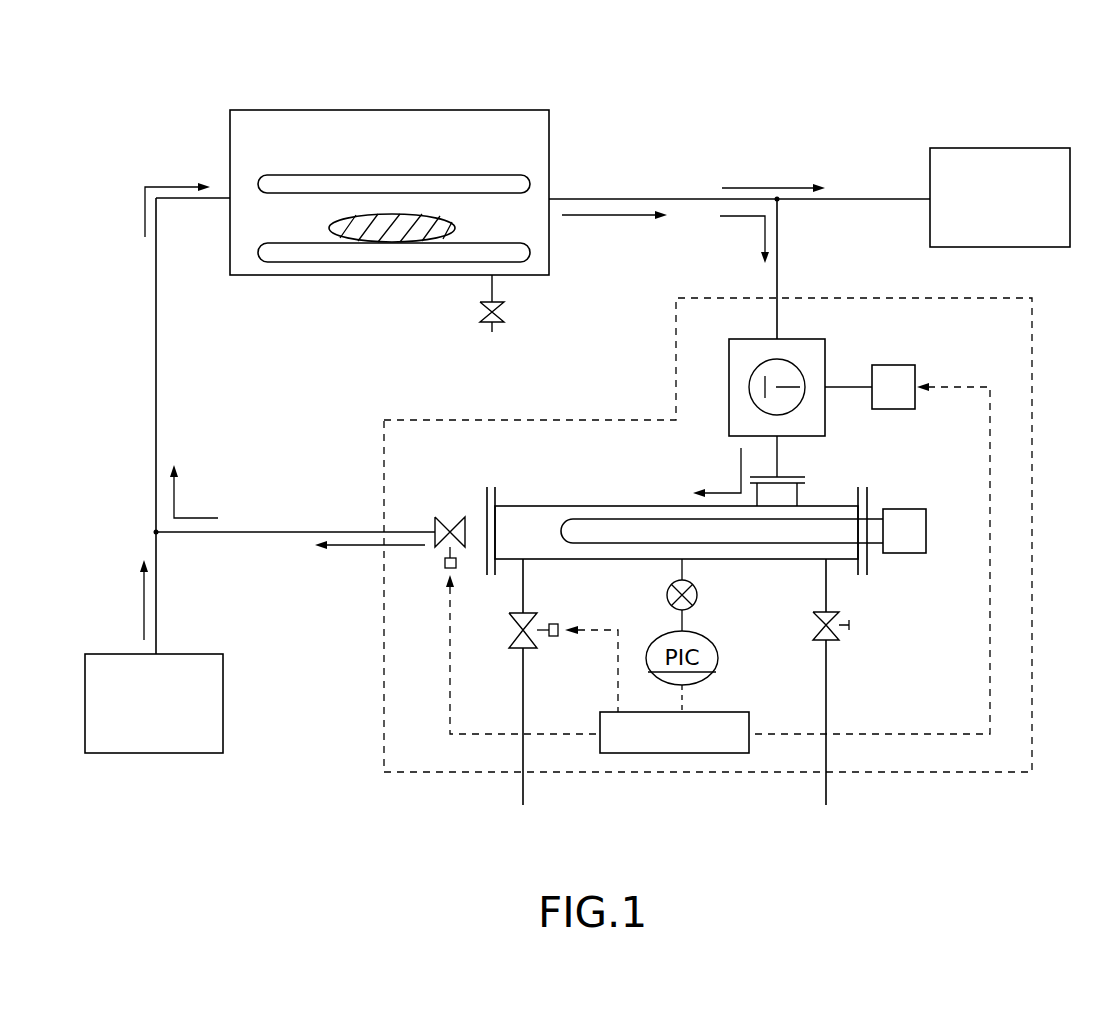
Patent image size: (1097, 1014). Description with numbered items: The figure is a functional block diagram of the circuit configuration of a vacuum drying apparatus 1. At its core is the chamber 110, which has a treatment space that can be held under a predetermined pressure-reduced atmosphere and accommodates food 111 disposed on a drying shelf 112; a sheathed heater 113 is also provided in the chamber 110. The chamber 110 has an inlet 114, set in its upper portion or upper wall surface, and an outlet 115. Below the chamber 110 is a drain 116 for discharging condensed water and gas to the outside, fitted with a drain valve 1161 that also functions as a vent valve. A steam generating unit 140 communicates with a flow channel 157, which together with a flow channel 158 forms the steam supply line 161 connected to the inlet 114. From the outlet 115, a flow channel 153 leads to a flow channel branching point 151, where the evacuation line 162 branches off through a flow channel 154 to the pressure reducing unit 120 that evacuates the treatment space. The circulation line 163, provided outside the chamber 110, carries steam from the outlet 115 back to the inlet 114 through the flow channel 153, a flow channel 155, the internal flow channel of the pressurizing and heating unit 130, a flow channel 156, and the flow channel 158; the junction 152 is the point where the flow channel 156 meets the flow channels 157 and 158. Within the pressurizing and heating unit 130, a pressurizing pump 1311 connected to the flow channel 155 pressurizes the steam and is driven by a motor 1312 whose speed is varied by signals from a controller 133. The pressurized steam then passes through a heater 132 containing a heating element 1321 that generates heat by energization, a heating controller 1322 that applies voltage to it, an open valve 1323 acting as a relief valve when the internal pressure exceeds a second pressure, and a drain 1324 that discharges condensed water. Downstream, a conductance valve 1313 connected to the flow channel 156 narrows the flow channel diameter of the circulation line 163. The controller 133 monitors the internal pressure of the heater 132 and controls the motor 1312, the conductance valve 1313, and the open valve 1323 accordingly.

The vacuum drying apparatus 1 is at (188, 76).
The chamber 110 is at (282, 110).
The food 111 is at (360, 247).
The drying shelf 112 is at (295, 263).
The sheathed heater 113 is at (450, 175).
The inlet 114 is at (228, 203).
The outlet 115 is at (552, 197).
The drain 116 is at (503, 310).
The drain valve 1161 is at (483, 317).
The pressure reducing unit 120 is at (1010, 148).
The pressurizing and heating unit 130 is at (930, 773).
The pressurizing pump 1311 is at (728, 378).
The motor 1312 is at (927, 350).
The conductance valve 1313 is at (448, 515).
The heater 132 is at (592, 503).
The heating element 1321 is at (647, 518).
The heating controller 1322 is at (902, 508).
The open valve 1323 is at (527, 613).
The drain 1324 is at (843, 618).
The controller 133 is at (727, 712).
The steam generating unit 140 is at (198, 653).
The flow channel branching point 151 is at (780, 205).
The junction point 152 is at (155, 532).
The flow channel 153 is at (677, 197).
The flow channel 154 is at (903, 198).
The flow channel 155 is at (775, 283).
The flow channel 156 is at (290, 530).
The flow channel 157 is at (160, 595).
The flow channel 158 is at (155, 353).
The steam supply line 161 is at (138, 291).
The evacuation line 162 is at (842, 180).
The circulation line 163 is at (330, 515).